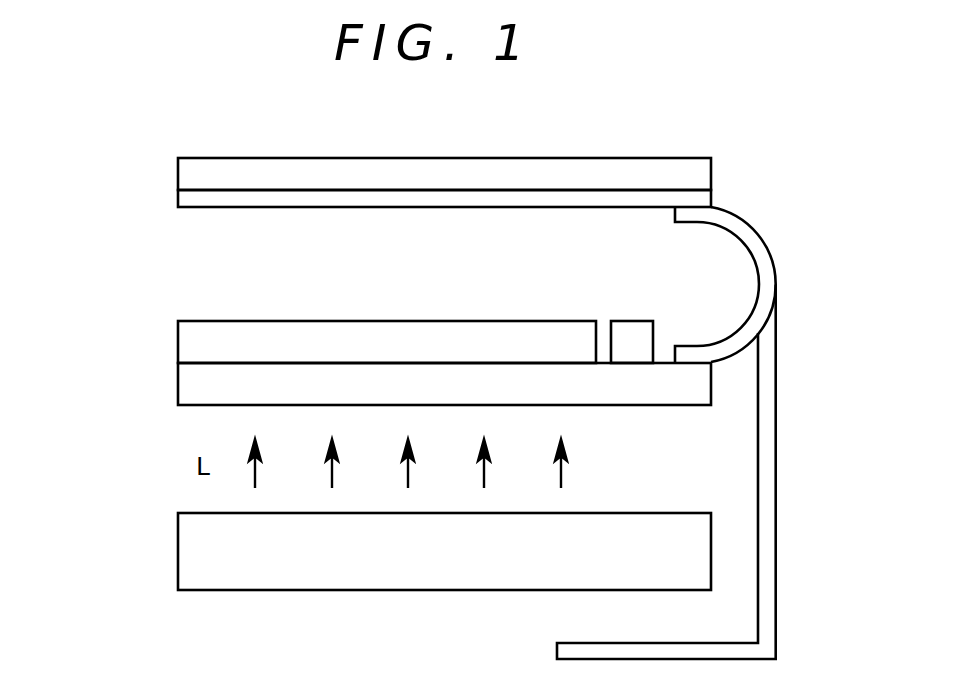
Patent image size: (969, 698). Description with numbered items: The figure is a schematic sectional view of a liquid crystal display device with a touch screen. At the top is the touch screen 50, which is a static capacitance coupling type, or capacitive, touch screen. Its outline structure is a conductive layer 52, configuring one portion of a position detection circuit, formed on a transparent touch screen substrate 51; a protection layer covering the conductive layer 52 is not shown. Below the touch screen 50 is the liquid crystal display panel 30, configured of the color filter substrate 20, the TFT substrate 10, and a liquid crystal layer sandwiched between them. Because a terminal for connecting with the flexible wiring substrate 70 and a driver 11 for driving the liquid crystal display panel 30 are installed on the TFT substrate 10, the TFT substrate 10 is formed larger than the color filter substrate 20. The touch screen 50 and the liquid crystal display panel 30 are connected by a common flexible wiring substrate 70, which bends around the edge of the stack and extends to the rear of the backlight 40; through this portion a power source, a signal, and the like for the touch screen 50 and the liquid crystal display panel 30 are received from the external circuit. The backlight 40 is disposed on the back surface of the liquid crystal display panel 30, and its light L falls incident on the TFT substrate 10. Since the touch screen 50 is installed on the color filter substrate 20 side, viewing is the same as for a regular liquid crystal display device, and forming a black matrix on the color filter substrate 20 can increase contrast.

The TFT substrate 10 is at (178, 380).
The driver 11 is at (631, 321).
The color filter substrate 20 is at (178, 345).
The liquid crystal display panel 30 is at (97, 323).
The backlight 40 is at (178, 553).
The touch screen 50 is at (97, 155).
The touch screen substrate 51 is at (178, 173).
The conductive layer 52 is at (178, 200).
The flexible wiring substrate 70 is at (776, 263).